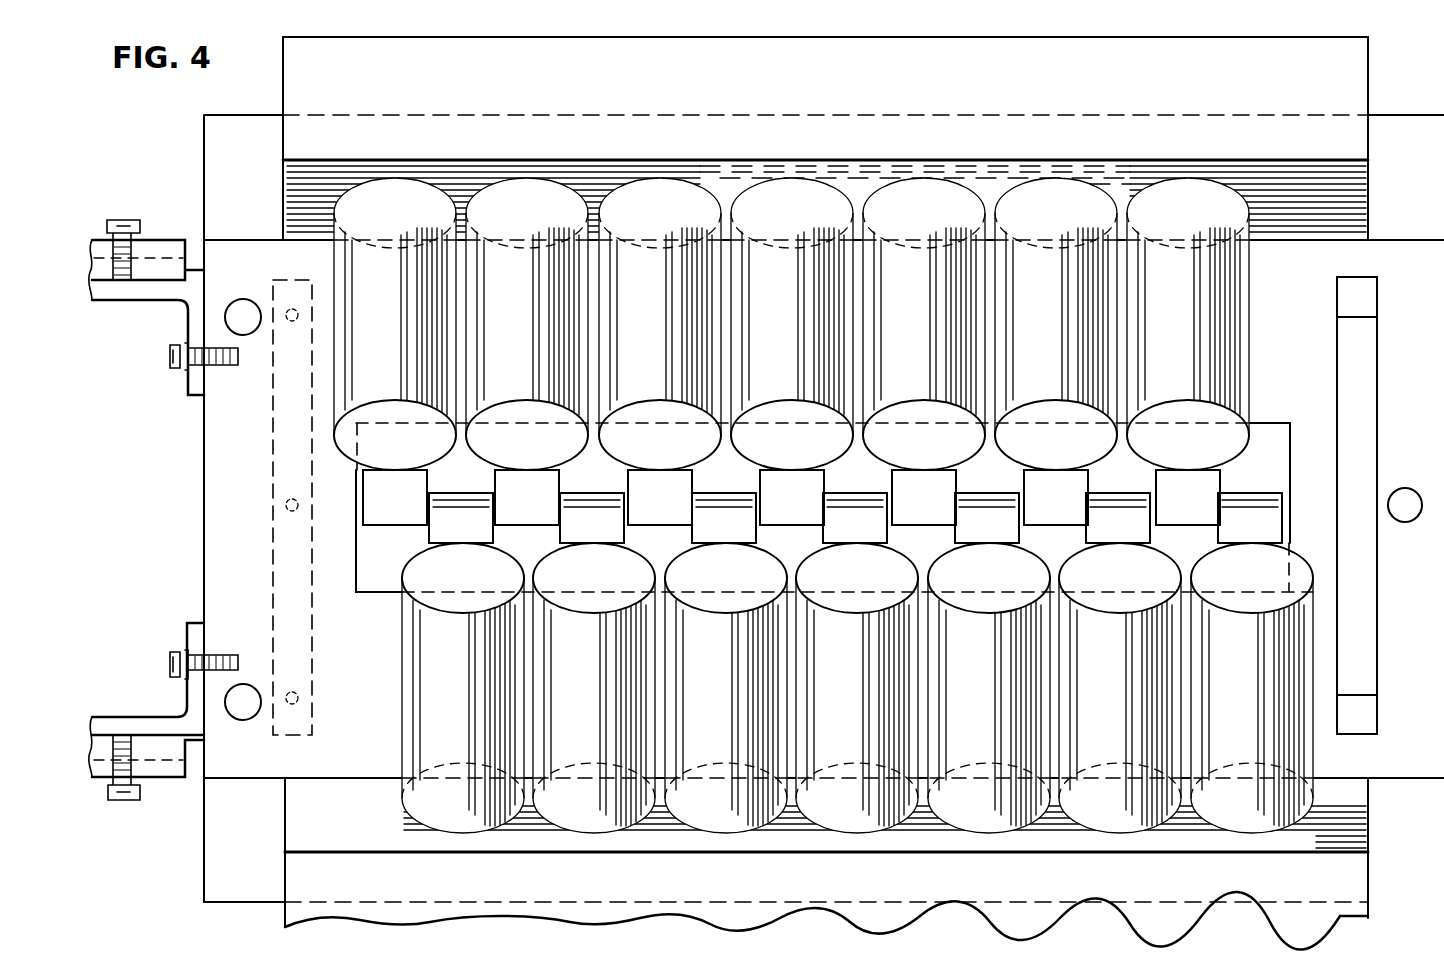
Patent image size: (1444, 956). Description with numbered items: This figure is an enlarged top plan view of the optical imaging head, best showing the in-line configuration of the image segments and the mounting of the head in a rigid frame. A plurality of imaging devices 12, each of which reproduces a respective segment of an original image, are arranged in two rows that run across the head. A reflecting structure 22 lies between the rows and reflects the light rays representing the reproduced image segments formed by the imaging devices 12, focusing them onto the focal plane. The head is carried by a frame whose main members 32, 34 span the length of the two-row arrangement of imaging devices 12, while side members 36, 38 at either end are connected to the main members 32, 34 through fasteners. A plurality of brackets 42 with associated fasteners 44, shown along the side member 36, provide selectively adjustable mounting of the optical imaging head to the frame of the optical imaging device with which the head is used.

The imaging device 12 is at (743, 190).
The reflecting structure 22 is at (1295, 503).
The main member 32 is at (522, 47).
The main member 34 is at (297, 877).
The side member 36 is at (212, 427).
The side member 38 is at (1432, 332).
The bracket 42 is at (160, 301).
The fastener 44 is at (142, 230).